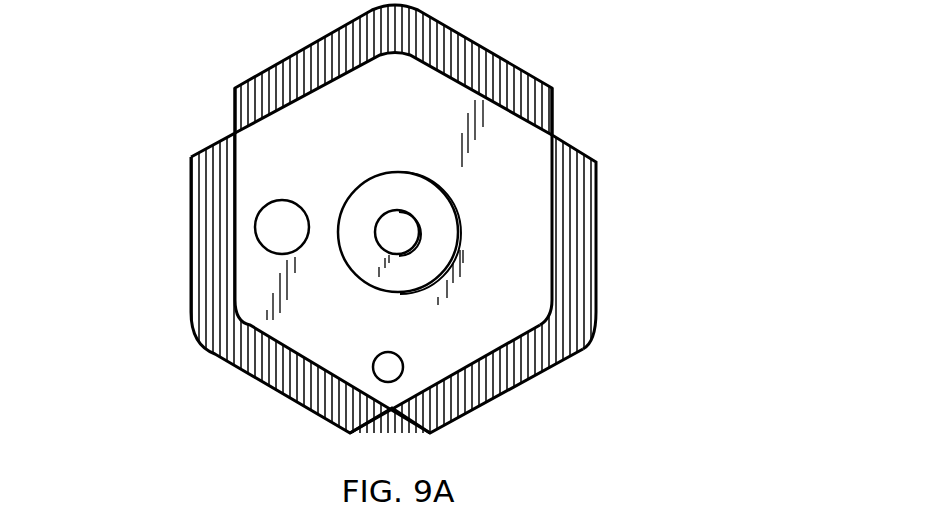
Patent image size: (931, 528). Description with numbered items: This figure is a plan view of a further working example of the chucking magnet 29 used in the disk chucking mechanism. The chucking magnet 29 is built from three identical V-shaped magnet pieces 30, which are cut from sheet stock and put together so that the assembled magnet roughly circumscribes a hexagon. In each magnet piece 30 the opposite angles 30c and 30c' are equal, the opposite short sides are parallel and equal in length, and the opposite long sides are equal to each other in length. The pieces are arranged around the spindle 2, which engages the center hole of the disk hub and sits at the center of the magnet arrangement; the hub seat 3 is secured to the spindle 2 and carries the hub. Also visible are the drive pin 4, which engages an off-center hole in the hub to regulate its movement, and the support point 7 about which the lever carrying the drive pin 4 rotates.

The chucking magnet 29 is at (611, 290).
The magnet piece 30 is at (473, 60).
The opposite angle 30c is at (621, 347).
The opposite angle 30c' is at (520, 295).
The drive pin 4 is at (283, 212).
The hub seat 3 is at (401, 185).
The spindle 2 is at (407, 230).
The support point 7 is at (392, 362).